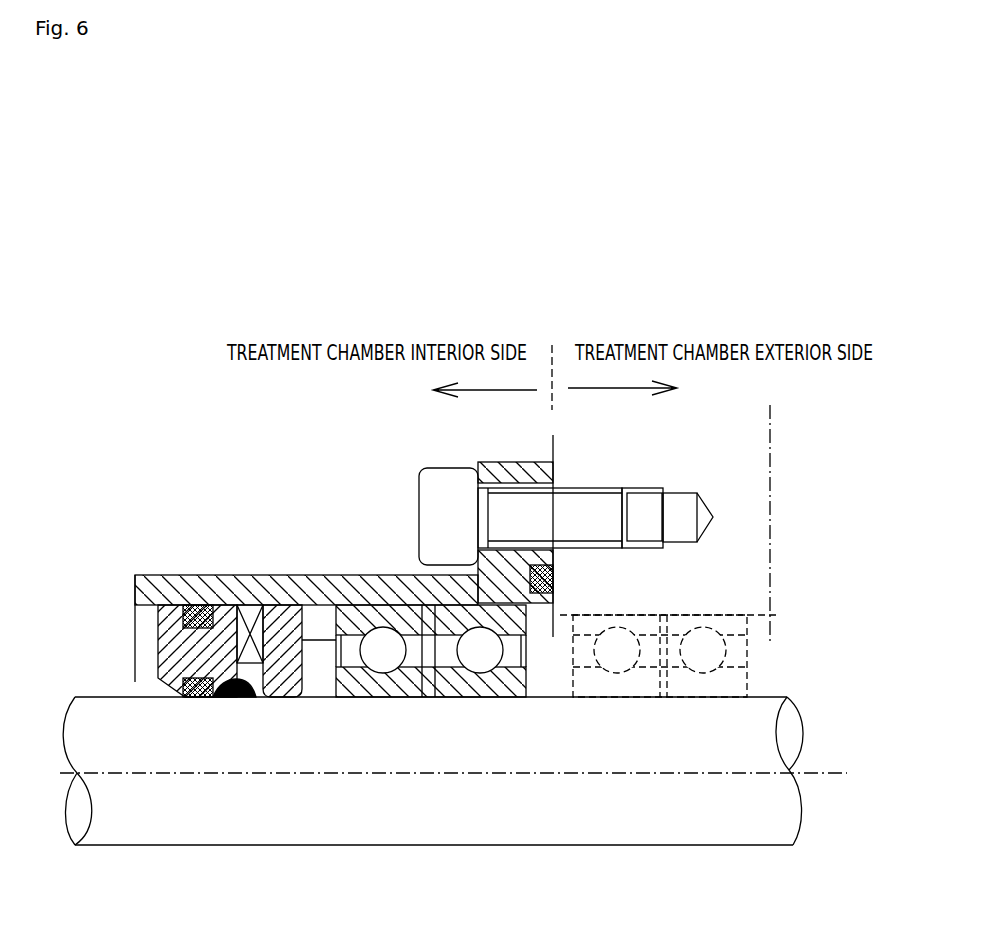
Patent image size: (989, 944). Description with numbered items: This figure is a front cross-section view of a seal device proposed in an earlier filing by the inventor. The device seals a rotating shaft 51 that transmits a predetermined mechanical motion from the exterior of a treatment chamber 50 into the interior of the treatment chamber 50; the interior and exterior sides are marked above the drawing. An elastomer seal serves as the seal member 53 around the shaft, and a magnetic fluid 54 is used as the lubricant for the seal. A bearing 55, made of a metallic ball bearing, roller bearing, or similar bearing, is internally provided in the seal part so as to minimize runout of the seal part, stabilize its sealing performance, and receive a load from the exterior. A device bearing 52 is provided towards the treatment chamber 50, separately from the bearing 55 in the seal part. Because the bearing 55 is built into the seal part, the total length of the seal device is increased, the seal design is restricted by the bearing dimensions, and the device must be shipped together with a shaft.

The treatment chamber 50 is at (160, 555).
The rotating shaft 51 is at (732, 746).
The device bearing 52 is at (733, 628).
The seal member 53 is at (195, 700).
The magnetic fluid 54 is at (246, 700).
The bearing 55 is at (357, 605).